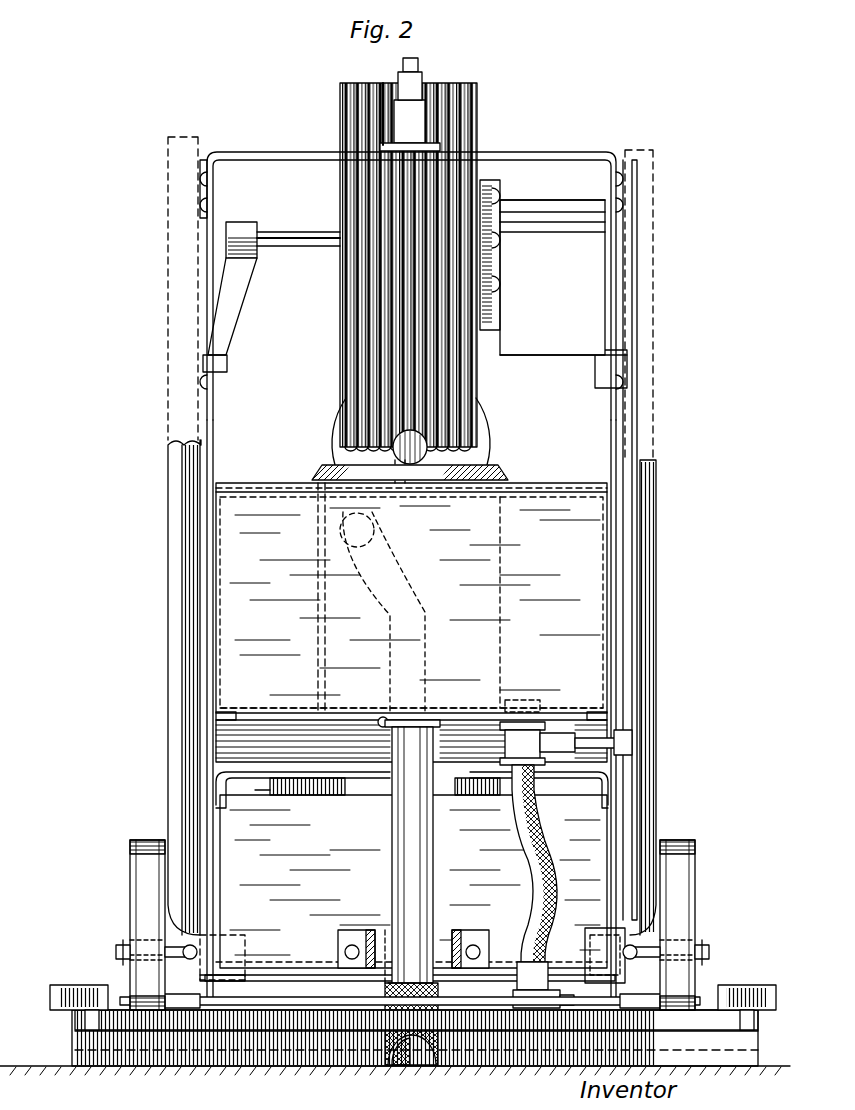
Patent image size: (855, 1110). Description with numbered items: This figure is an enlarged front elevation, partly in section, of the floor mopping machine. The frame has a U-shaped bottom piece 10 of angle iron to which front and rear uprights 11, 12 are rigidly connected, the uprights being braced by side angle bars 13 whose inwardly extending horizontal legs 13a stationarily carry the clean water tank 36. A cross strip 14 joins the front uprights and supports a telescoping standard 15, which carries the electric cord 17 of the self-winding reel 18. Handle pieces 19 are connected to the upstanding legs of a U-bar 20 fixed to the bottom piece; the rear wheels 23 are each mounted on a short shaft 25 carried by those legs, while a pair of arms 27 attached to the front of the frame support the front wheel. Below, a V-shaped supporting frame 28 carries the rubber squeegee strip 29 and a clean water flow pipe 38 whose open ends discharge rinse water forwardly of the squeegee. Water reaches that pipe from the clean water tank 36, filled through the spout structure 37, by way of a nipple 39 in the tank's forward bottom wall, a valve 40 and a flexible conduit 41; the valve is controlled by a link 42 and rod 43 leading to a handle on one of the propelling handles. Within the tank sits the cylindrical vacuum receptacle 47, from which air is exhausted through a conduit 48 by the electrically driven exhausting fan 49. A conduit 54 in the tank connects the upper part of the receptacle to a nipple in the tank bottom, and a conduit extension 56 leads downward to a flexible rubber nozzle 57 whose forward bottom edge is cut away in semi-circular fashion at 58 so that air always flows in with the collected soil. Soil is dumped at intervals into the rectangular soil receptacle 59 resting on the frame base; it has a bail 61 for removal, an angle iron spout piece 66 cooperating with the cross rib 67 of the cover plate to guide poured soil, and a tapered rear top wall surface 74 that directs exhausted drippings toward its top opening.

The U-shaped bottom piece 10 is at (298, 940).
The front uprights 11 is at (616, 433).
The rear uprights 12 is at (203, 431).
The side angle bars 13 is at (216, 713).
The horizontal legs of frame brace bars 13a is at (292, 667).
The cross strip 14 is at (553, 152).
The telescoping standard 15 is at (421, 66).
The electric cord 17 is at (385, 92).
The self-winding reel 18 is at (478, 112).
The handle pieces 19 is at (183, 546).
The U-bar 20 is at (262, 980).
The rear wheels 23 is at (143, 879).
The short shaft 25 is at (118, 951).
The arms 27 is at (346, 934).
The V-shaped supporting frame 28 is at (250, 1032).
The rubber squeegee strip 29 is at (330, 1052).
The clean water tank 36 is at (240, 571).
The spout structure 37 is at (508, 471).
The clean water flow pipe 38 is at (292, 1012).
The nipple 39 is at (536, 700).
The valve 40 is at (535, 745).
The flexible conduit 41 is at (552, 852).
The link 42 is at (633, 746).
The rod 43 is at (634, 357).
The cylindrical receptacle 47 is at (318, 630).
The conduit 48 is at (425, 459).
The exhausting fan 49 is at (487, 425).
The conduit 54 is at (406, 554).
The conduit extension 56 is at (394, 821).
The nozzle 57 is at (393, 1020).
The semi-circular cut-away 58 is at (428, 1045).
The soil receptacle 59 is at (410, 888).
The bail 61 is at (270, 780).
The angle iron piece 66 is at (330, 786).
The cross rib 67 is at (500, 786).
The tapered rear top wall surface 74 is at (306, 742).